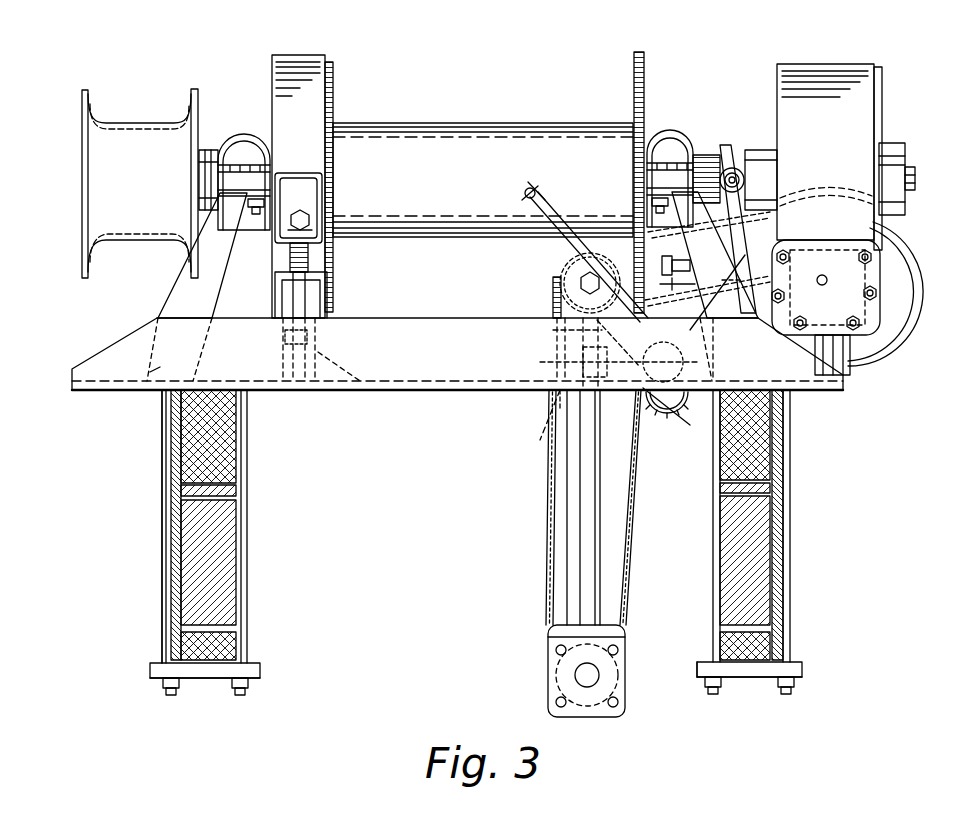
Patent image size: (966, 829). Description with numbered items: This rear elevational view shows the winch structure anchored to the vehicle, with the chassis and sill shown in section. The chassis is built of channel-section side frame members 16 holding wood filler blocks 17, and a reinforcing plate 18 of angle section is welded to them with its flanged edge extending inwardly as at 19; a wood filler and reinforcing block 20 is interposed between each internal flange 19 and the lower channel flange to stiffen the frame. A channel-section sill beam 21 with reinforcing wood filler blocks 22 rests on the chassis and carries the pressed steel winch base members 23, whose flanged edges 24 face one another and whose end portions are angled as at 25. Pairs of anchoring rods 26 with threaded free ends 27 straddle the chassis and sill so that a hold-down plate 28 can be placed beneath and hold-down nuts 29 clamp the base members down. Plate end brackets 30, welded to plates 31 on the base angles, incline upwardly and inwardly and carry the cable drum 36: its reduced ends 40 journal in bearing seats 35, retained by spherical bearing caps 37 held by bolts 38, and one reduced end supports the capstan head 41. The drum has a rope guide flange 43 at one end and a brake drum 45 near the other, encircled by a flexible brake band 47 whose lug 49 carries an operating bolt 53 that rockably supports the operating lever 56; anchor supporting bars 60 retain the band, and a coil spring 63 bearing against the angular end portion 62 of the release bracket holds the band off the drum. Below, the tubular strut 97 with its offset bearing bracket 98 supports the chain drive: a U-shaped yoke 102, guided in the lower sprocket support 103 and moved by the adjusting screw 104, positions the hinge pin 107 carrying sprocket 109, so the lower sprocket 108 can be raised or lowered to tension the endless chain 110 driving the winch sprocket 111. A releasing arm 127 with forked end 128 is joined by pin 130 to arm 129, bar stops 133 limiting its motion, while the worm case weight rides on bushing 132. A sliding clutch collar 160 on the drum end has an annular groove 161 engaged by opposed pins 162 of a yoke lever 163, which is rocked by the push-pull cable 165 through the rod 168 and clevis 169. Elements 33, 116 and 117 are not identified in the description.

The side frame members 16 is at (170, 580).
The wood filler blocks 17 is at (232, 566).
The reinforcing plate 18 is at (172, 536).
The inwardly extending flange 19 is at (208, 668).
The wood filler and reinforcing block 20 is at (222, 650).
The sill beam 21 is at (782, 447).
The reinforcing wood filler blocks 22 is at (216, 447).
The winch base members 23 is at (430, 394).
The flanged edges 24 is at (440, 332).
The angled end portions 25 is at (116, 348).
The anchoring rods 26 is at (165, 480).
The threaded free ends 27 is at (170, 698).
The hold-down plate 28 is at (150, 675).
The hold-down nuts 29 is at (697, 686).
The plate end brackets 30 is at (221, 290).
The plates 31 is at (148, 385).
The horizontal mounting plate 33 is at (178, 283).
The bearing seats 35 is at (258, 236).
The cable drum 36 is at (445, 130).
The spherical bearing caps 37 is at (246, 134).
The bolts 38 is at (231, 165).
The reduced drum ends 40 is at (706, 152).
The capstan head 41 is at (137, 142).
The rope guide flange 43 is at (634, 62).
The brake drum 45 is at (334, 84).
The brake band 47 is at (306, 64).
The brake band lug 49 is at (314, 176).
The operating bolt 53 is at (302, 218).
The operating lever 56 is at (303, 382).
The anchor supporting bars 60 is at (332, 391).
The angular end portion 62 is at (327, 283).
The coil spring 63 is at (310, 258).
The tubular strut 97 is at (566, 546).
The offset bearing bracket 98 is at (599, 718).
The U-shaped yoke 102 is at (536, 256).
The lower sprocket support 103 is at (557, 334).
The adjusting screw 104 is at (522, 200).
The hinge pin 107 is at (553, 286).
The lower sprocket 108 is at (656, 400).
The sprocket 109 is at (560, 302).
The endless chain 110 is at (550, 465).
The winch driving sprocket wheel 111 is at (906, 283).
The shaft end 116 is at (916, 176).
The output shaft housing 117 is at (904, 144).
The releasing arm 127 is at (826, 287).
The forked end 128 is at (824, 290).
The arm 129 is at (690, 284).
The pin 130 is at (690, 250).
The bushing 132 is at (711, 259).
The bar stops 133 is at (706, 296).
The sliding clutch collar 160 is at (766, 166).
The annular groove 161 is at (731, 142).
The opposed pins 162 is at (737, 168).
The yoke lever 163 is at (785, 230).
The push-pull cable 165 is at (548, 372).
The rod 168 is at (566, 405).
The clevis 169 is at (700, 404).